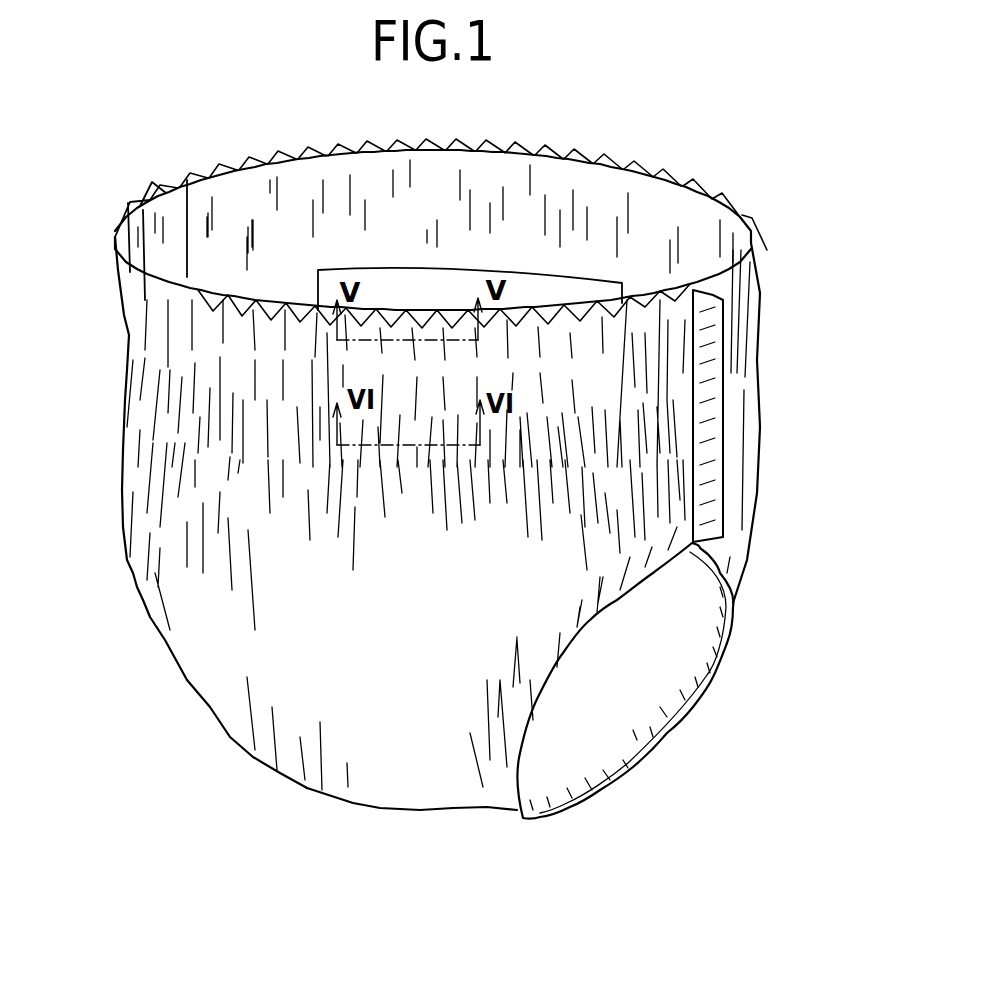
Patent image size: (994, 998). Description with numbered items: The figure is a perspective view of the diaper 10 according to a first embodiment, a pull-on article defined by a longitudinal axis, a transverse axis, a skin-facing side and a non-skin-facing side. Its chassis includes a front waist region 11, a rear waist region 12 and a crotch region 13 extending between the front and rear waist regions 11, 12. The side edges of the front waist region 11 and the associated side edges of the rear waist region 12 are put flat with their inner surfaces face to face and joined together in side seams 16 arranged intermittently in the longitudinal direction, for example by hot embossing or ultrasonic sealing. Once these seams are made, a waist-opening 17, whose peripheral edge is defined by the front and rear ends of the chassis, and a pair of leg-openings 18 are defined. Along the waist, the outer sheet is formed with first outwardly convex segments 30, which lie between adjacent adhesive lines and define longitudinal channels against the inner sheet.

The diaper 10 is at (717, 136).
The front waist region 11 is at (137, 382).
The rear waist region 12 is at (548, 180).
The crotch region 13 is at (375, 787).
The side seams 16 is at (708, 362).
The waist-opening 17 is at (607, 193).
The leg-openings 18 is at (633, 730).
The first outwardly convex segments 30 is at (150, 293).